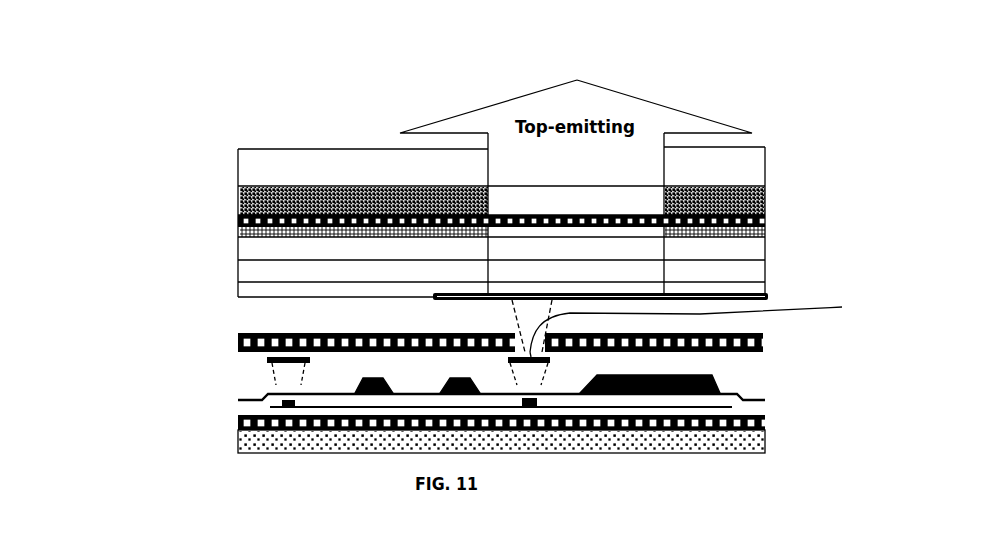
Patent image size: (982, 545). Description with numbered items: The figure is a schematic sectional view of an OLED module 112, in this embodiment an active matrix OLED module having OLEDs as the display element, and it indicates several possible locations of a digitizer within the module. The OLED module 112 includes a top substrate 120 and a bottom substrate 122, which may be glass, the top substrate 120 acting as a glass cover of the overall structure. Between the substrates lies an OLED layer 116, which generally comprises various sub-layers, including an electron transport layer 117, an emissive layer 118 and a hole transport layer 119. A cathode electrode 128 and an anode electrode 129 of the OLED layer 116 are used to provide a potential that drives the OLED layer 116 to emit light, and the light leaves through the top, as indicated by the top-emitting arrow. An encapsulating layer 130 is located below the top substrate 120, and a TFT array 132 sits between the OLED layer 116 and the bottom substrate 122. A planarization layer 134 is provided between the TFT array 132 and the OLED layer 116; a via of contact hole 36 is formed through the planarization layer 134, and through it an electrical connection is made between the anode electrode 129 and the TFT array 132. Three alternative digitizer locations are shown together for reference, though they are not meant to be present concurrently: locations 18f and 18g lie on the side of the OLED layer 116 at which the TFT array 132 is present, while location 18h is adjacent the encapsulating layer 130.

The OLED module 112 is at (725, 127).
The top substrate 120 is at (238, 167).
The encapsulating layer 130 is at (238, 194).
The cathode electrode 128 is at (461, 217).
The digitizer location 18h is at (771, 222).
The OLED layer 116 is at (428, 278).
The electron transport layer 117 is at (238, 251).
The emissive layer 118 is at (238, 270).
The hole transport layer 119 is at (238, 291).
The anode electrode 129 is at (433, 297).
The via of contact hole 36 is at (691, 324).
The planarization layer 134 is at (257, 318).
The digitizer location 18f is at (768, 339).
The TFT array 132 is at (228, 348).
The digitizer location 18g is at (768, 417).
The bottom substrate 122 is at (238, 445).